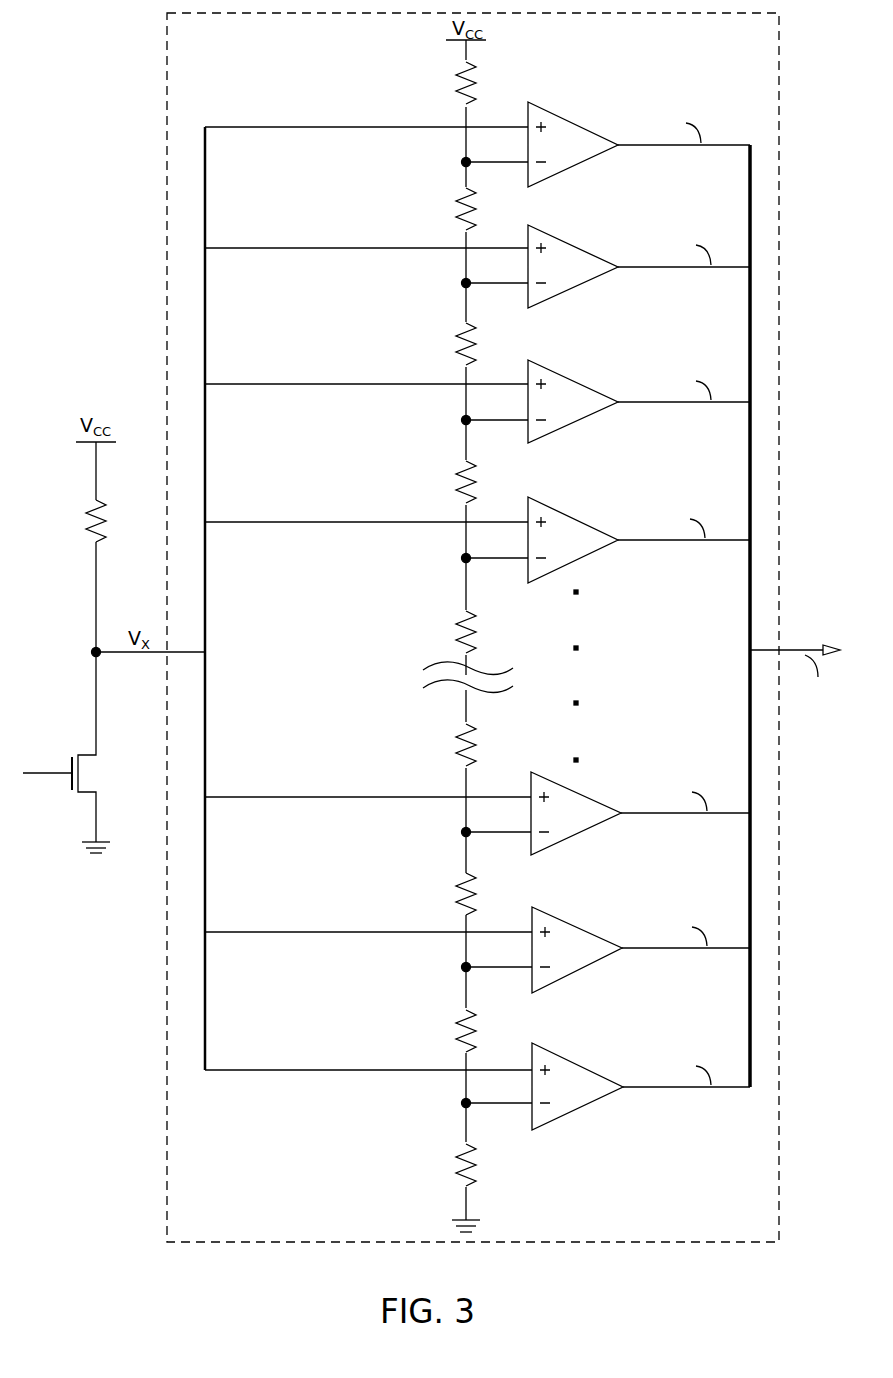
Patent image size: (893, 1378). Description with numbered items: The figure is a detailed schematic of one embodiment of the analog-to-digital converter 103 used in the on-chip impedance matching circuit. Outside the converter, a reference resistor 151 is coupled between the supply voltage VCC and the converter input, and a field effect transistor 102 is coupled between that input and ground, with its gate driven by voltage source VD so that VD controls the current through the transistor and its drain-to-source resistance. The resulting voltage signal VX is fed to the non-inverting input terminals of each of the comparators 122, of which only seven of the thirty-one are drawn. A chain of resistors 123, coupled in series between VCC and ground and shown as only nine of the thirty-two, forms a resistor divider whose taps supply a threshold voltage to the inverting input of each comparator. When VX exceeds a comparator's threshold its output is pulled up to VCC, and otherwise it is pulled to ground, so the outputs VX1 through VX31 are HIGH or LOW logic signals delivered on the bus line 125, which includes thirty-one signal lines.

The field effect transistor 102 is at (70, 788).
The analog-to-digital converter 103 is at (777, 73).
The comparators 122 is at (606, 610).
The resistors 123 is at (483, 636).
The bus line 125 is at (797, 650).
The reference resistor 151 is at (85, 523).